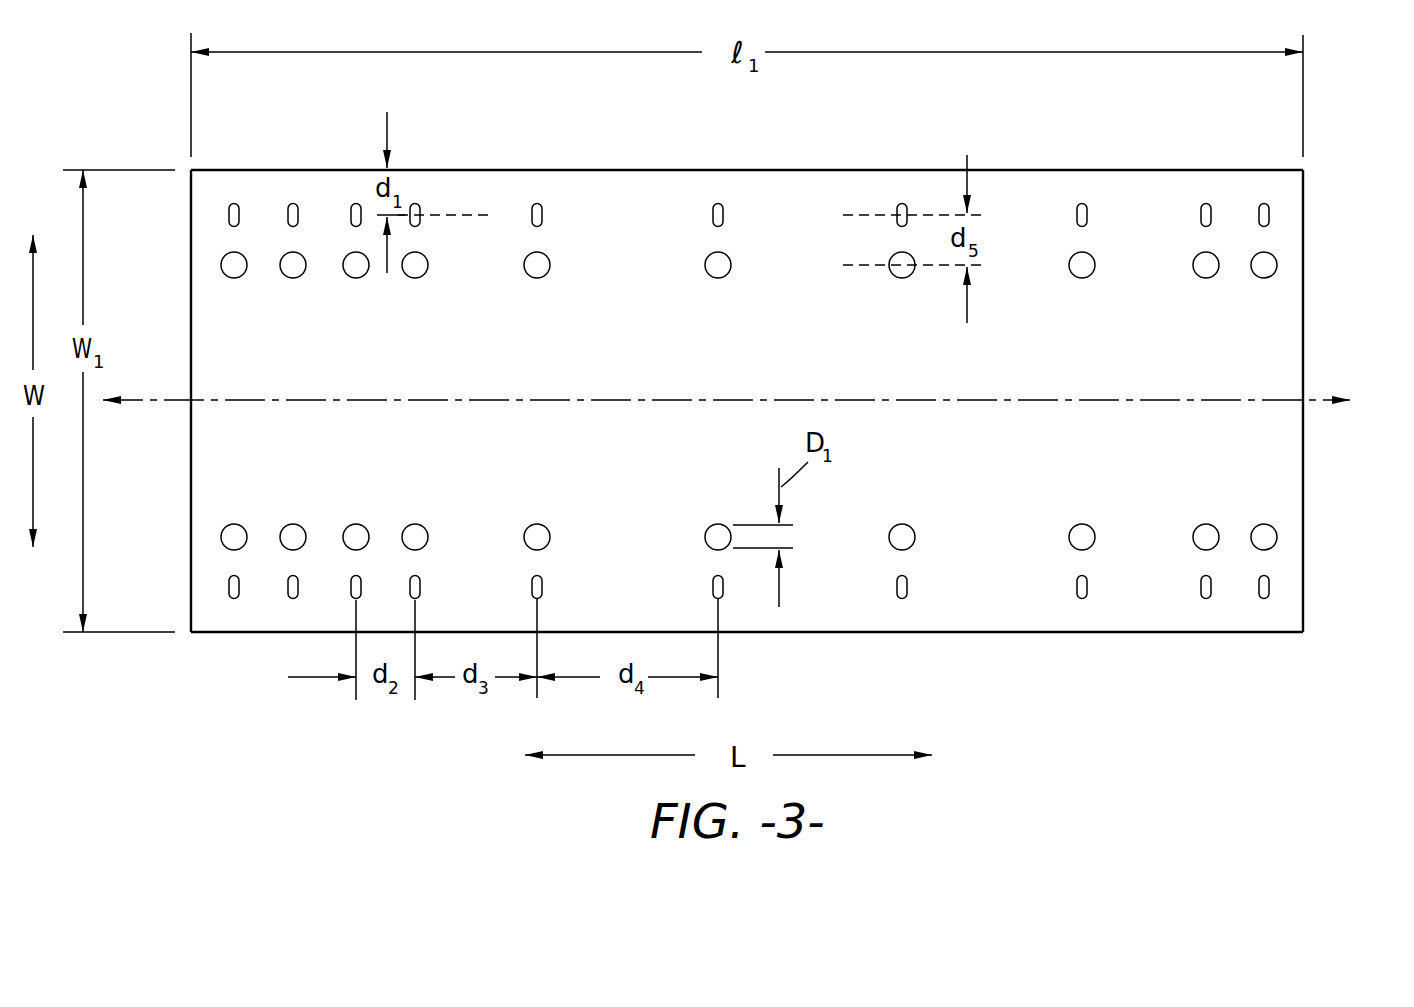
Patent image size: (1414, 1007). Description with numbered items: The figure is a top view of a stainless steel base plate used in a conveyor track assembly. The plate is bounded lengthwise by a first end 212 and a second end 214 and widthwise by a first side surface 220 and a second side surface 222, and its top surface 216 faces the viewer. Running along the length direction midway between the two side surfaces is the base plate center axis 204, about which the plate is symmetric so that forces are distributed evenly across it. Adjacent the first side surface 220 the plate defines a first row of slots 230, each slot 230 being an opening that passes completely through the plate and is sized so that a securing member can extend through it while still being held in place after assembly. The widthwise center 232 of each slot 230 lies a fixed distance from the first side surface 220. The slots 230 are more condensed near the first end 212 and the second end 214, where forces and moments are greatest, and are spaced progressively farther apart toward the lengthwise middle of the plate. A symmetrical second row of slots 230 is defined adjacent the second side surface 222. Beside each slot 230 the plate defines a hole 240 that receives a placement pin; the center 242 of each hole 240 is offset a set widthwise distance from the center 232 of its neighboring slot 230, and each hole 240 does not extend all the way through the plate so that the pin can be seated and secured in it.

The base plate center axis 204 is at (1273, 398).
The first end 212 is at (1317, 518).
The second end 214 is at (173, 492).
The top surface 216 is at (1262, 313).
The first side surface 220 is at (1135, 168).
The second side surface 222 is at (1135, 634).
The slot 230 is at (284, 206).
The widthwise center of slot 232 is at (467, 213).
The hole 240 is at (540, 278).
The center of hole 242 is at (855, 267).